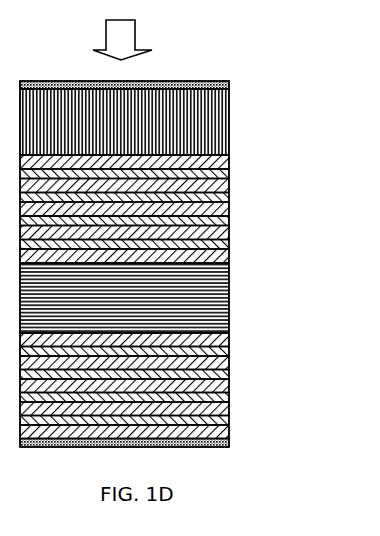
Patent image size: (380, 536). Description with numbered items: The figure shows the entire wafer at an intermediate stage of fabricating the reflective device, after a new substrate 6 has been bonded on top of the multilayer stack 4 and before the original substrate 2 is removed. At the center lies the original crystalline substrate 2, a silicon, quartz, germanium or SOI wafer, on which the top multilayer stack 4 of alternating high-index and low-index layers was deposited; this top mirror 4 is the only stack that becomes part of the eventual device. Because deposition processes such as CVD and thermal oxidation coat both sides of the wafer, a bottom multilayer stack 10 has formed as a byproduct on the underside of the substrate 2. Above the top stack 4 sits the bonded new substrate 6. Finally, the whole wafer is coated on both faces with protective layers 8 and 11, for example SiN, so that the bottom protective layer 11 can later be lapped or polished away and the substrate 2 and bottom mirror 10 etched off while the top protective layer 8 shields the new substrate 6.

The protective layer 8 is at (208, 80).
The new substrate 6 is at (230, 125).
The top multilayer stack 4 is at (226, 208).
The crystalline substrate 2 is at (226, 298).
The bottom multilayer stack 10 is at (226, 385).
The protective layer 11 is at (232, 445).